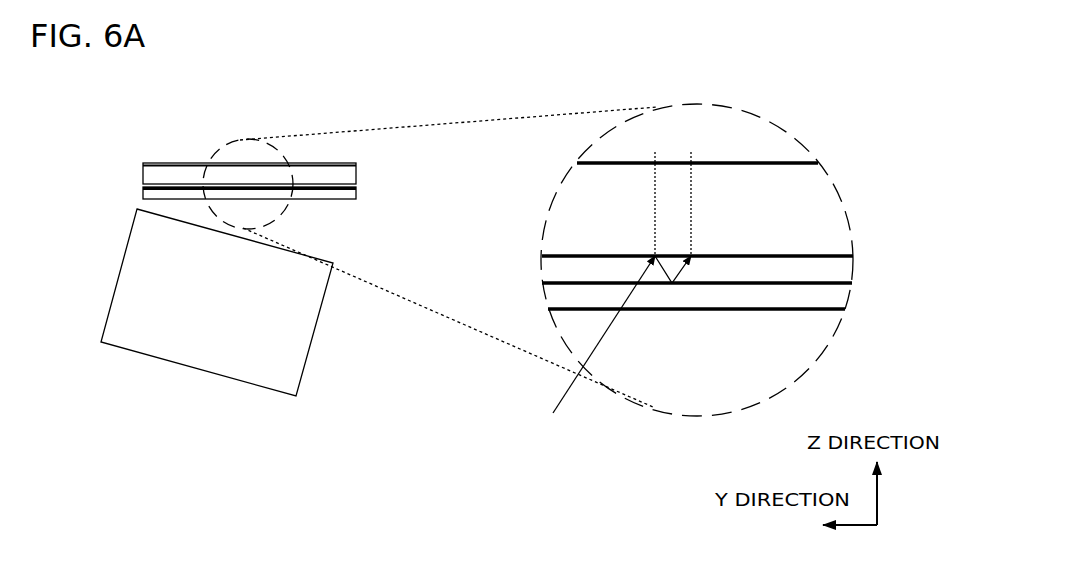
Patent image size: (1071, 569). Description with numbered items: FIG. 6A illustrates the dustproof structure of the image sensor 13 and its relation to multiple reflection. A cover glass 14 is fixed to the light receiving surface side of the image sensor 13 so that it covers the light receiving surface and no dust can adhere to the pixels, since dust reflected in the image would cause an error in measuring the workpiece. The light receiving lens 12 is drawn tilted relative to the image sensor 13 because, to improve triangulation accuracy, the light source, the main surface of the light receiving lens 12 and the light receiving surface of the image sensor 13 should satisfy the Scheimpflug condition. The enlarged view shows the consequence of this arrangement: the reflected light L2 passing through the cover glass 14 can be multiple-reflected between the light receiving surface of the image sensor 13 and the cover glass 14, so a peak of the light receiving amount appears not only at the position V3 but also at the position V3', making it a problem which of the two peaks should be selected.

The light receiving lens 12 is at (142, 282).
The image sensor 13 is at (152, 172).
The cover glass 14 is at (145, 188).
The reflected light L2 is at (553, 412).
The position V3 is at (656, 191).
The position V3' is at (694, 191).